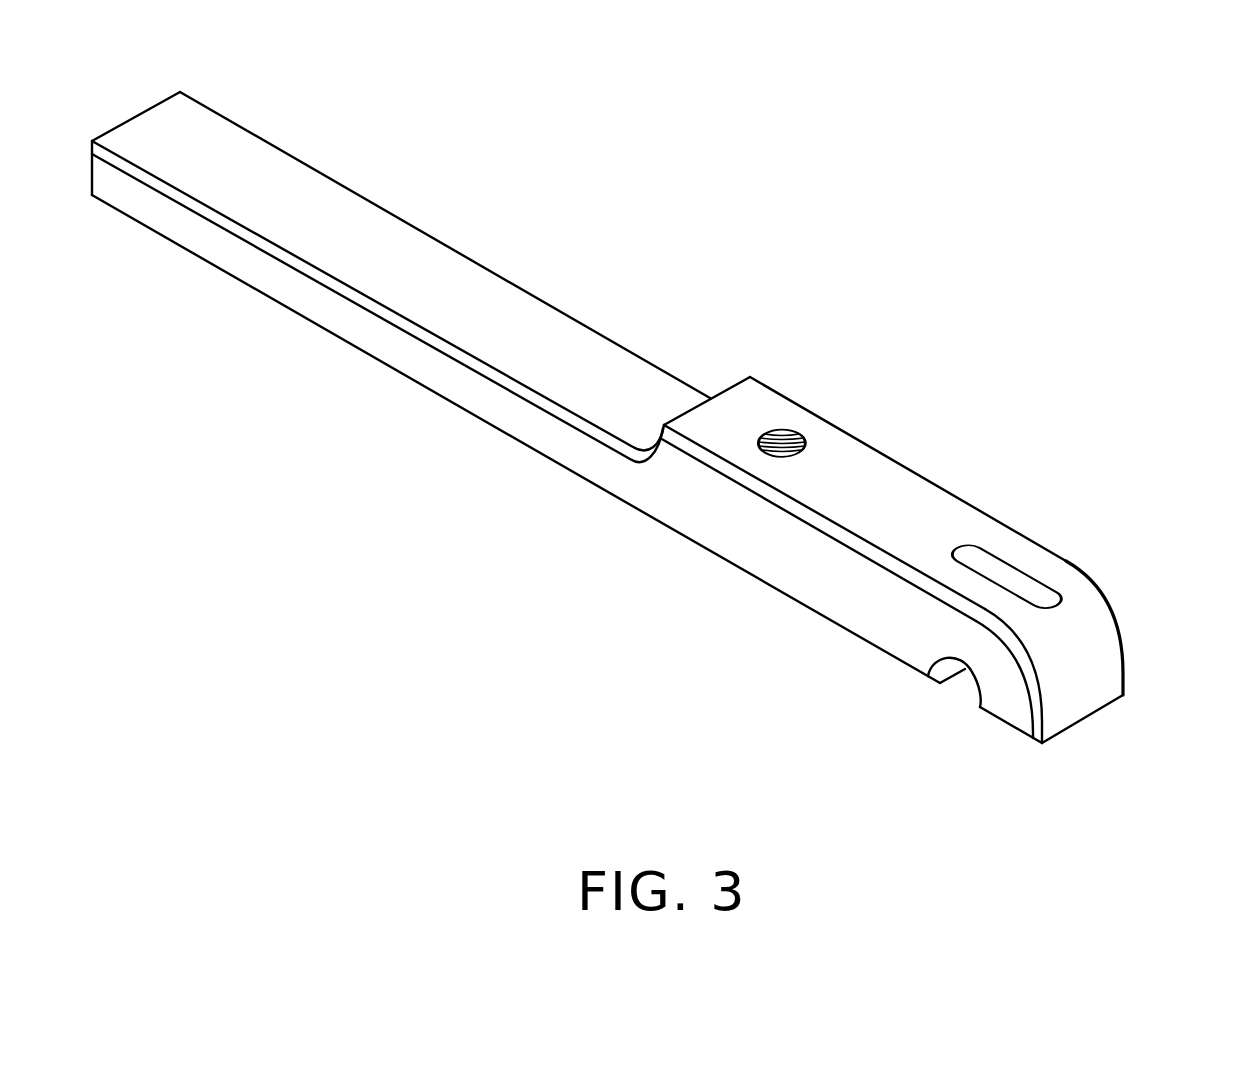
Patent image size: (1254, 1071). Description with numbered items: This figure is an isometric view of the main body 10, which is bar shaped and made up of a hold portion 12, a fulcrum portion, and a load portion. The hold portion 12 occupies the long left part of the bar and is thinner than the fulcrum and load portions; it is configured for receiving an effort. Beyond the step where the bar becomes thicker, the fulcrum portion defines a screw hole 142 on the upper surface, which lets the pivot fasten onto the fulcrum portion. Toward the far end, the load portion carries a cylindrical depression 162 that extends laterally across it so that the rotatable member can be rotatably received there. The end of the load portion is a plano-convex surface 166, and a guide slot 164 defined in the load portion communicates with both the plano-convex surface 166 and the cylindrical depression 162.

The main body 10 is at (721, 214).
The hold portion 12 is at (177, 148).
The screw hole 142 is at (778, 450).
The cylindrical depression 162 is at (963, 680).
The guide slot 164 is at (1000, 573).
The plano-convex surface 166 is at (1073, 655).